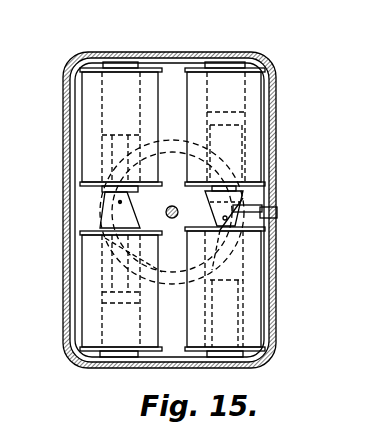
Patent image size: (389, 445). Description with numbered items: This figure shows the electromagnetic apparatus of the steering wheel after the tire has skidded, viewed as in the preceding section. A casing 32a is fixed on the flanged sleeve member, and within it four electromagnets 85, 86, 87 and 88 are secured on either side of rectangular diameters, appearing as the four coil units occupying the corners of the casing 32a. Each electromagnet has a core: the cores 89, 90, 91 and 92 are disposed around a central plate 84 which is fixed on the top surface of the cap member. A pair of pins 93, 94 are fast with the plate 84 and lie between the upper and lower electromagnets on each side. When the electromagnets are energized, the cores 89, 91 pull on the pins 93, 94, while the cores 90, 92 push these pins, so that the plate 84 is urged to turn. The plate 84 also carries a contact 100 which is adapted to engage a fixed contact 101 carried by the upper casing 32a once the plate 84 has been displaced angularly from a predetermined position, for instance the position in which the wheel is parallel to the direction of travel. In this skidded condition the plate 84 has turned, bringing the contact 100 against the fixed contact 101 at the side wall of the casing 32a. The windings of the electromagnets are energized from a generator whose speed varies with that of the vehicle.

The casing 32a is at (277, 137).
The plate 84 is at (178, 273).
The electromagnet 85 is at (92, 75).
The electromagnet 86 is at (258, 85).
The electromagnet 87 is at (252, 312).
The electromagnet 88 is at (93, 320).
The core 89 is at (113, 103).
The core 90 is at (250, 130).
The core 91 is at (250, 285).
The core 92 is at (80, 270).
The pin 93 is at (120, 202).
The pin 94 is at (248, 212).
The contact 100 is at (258, 203).
The fixed contact 101 is at (279, 211).